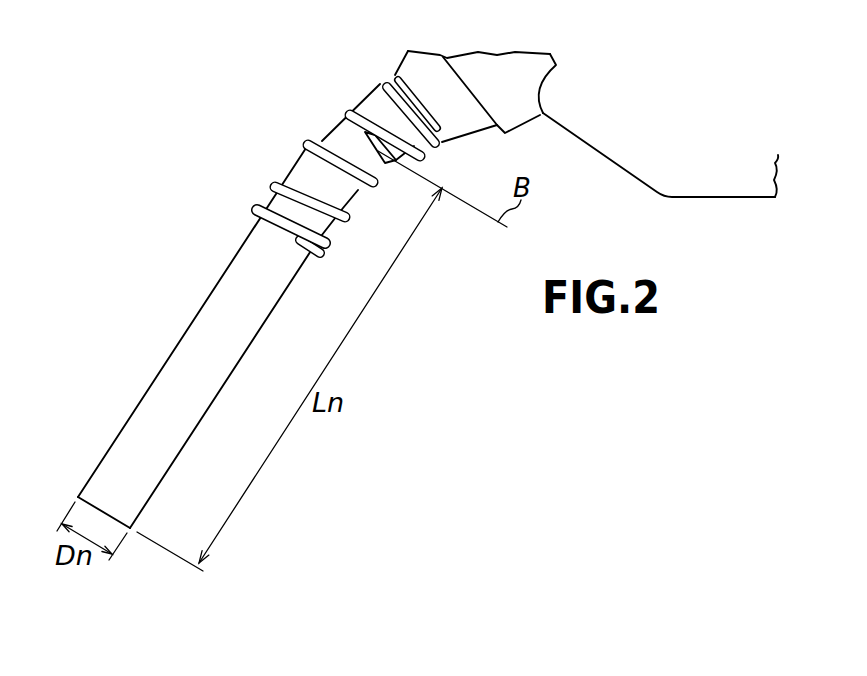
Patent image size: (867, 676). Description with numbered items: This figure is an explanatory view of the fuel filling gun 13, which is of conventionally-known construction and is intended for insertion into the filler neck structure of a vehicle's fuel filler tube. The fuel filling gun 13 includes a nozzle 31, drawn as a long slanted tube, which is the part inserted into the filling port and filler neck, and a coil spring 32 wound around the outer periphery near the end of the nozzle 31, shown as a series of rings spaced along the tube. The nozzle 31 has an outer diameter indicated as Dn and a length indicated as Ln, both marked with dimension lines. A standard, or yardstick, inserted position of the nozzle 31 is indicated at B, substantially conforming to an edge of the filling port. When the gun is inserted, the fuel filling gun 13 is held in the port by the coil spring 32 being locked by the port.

The fuel filling gun 13 is at (253, 133).
The nozzle 31 is at (177, 343).
The coil spring 32 is at (274, 187).